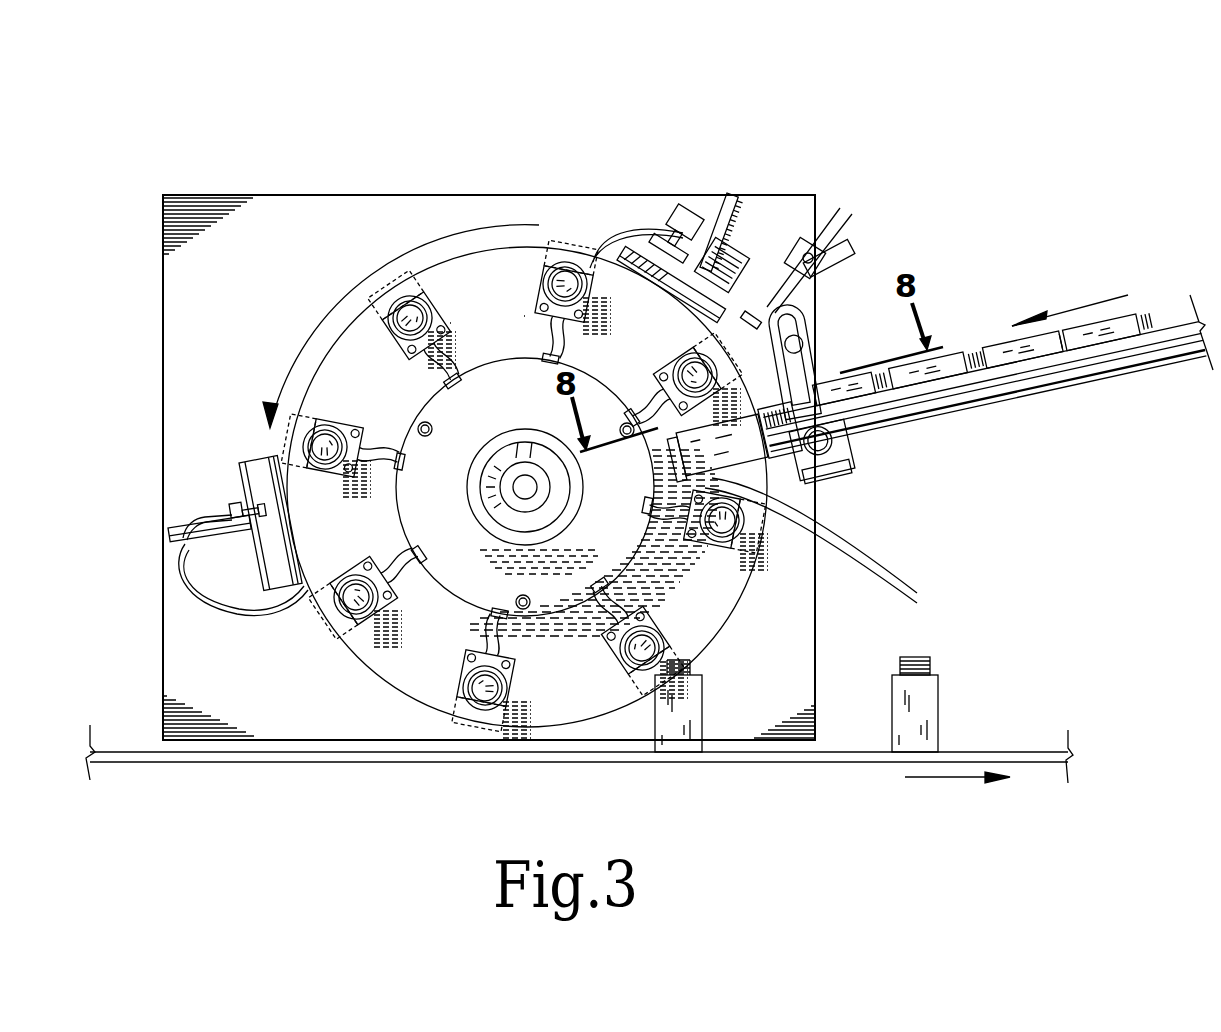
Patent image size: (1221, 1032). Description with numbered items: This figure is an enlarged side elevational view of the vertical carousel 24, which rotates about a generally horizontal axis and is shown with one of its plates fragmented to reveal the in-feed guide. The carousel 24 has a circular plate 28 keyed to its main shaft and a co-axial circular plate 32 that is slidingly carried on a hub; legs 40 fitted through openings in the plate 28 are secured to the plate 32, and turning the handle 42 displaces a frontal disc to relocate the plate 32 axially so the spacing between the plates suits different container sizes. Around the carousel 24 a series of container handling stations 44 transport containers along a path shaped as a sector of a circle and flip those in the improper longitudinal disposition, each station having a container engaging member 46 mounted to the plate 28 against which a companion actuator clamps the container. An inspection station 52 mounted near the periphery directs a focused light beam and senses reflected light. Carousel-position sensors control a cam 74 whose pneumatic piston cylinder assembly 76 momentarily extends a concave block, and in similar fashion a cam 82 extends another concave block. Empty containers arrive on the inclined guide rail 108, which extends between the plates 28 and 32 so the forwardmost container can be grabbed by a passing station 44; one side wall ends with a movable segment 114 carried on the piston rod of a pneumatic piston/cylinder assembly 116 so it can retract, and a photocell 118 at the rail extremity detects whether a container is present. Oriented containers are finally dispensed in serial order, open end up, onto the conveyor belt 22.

The conveyor belt 22 is at (868, 758).
The vertical carousel 24 is at (336, 653).
The circular plate 28 is at (411, 673).
The circular plate 32 is at (753, 487).
The legs 40 is at (419, 425).
The handle 42 is at (518, 432).
The container handling station 44 is at (525, 316).
The container engaging member 46 is at (572, 268).
The inspection station 52 is at (758, 300).
The cam 74 is at (680, 242).
The pneumatic piston cylinder assembly 76 is at (713, 214).
The cam 82 is at (186, 522).
The inclined guide rail 108 is at (1013, 400).
The movable segment 114 is at (770, 460).
The pneumatic piston/cylinder assembly 116 is at (838, 452).
The photocell 118 is at (773, 490).